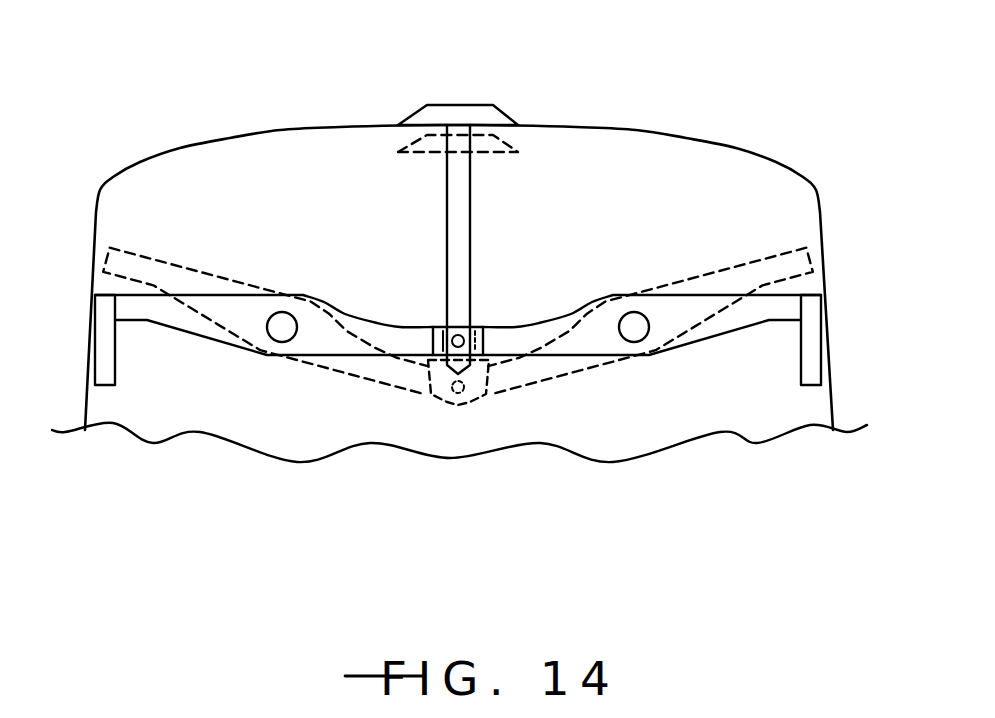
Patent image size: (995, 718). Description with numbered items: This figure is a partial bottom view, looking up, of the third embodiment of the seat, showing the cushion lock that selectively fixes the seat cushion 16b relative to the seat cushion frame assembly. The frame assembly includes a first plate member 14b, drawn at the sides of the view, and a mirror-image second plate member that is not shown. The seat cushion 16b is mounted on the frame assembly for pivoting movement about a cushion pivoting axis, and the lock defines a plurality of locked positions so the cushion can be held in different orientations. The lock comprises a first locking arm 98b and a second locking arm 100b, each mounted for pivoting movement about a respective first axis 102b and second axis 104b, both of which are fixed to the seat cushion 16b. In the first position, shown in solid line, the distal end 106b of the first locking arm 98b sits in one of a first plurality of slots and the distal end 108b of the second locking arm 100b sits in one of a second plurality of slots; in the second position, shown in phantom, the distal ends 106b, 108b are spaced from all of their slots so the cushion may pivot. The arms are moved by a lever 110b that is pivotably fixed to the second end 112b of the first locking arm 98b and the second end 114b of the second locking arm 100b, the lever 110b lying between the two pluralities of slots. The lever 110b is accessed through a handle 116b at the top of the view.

The first plate member 14b is at (105, 355).
The seat cushion 16b is at (735, 125).
The first locking arm 98b is at (338, 330).
The second locking arm 100b is at (520, 328).
The first axis 102b is at (280, 332).
The second axis 104b is at (634, 327).
The distal end of first locking arm 106b is at (118, 263).
The distal end of second locking arm 108b is at (795, 265).
The lever 110b is at (460, 218).
The second end of first locking arm 112b is at (430, 326).
The second end of second locking arm 114b is at (496, 327).
The handle 116b is at (458, 108).